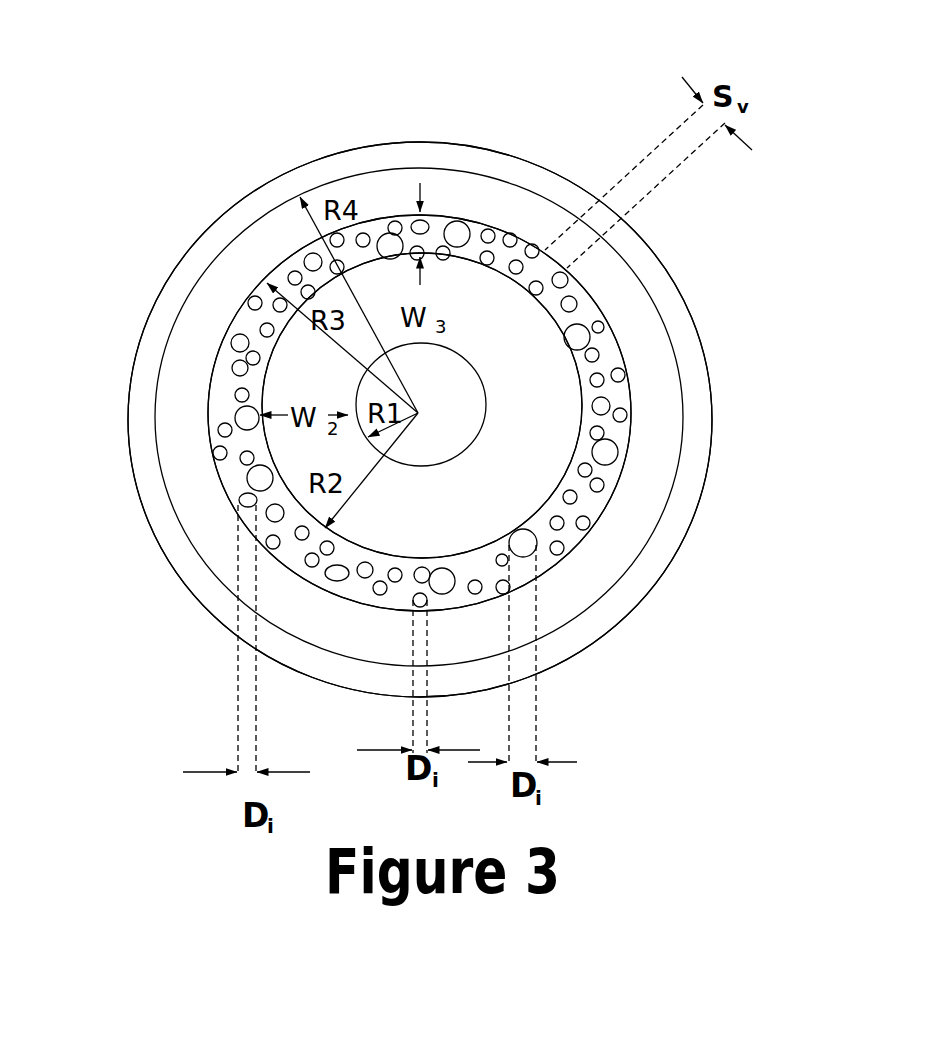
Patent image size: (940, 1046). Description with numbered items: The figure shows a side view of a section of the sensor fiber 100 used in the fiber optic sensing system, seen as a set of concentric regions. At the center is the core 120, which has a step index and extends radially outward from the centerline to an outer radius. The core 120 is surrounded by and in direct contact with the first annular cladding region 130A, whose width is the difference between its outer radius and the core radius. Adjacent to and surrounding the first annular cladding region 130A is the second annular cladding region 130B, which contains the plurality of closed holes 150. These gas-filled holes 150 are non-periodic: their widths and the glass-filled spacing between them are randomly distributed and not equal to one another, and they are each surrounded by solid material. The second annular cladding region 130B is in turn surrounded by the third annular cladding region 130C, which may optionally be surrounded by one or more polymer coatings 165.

The sensor fiber 100 is at (488, 117).
The core 120 is at (448, 427).
The first annular cladding region 130A is at (497, 477).
The second annular cladding region 130B is at (548, 563).
The third annular cladding region 130C is at (573, 534).
The closed holes 150 is at (587, 333).
The polymer coatings 165 is at (563, 638).